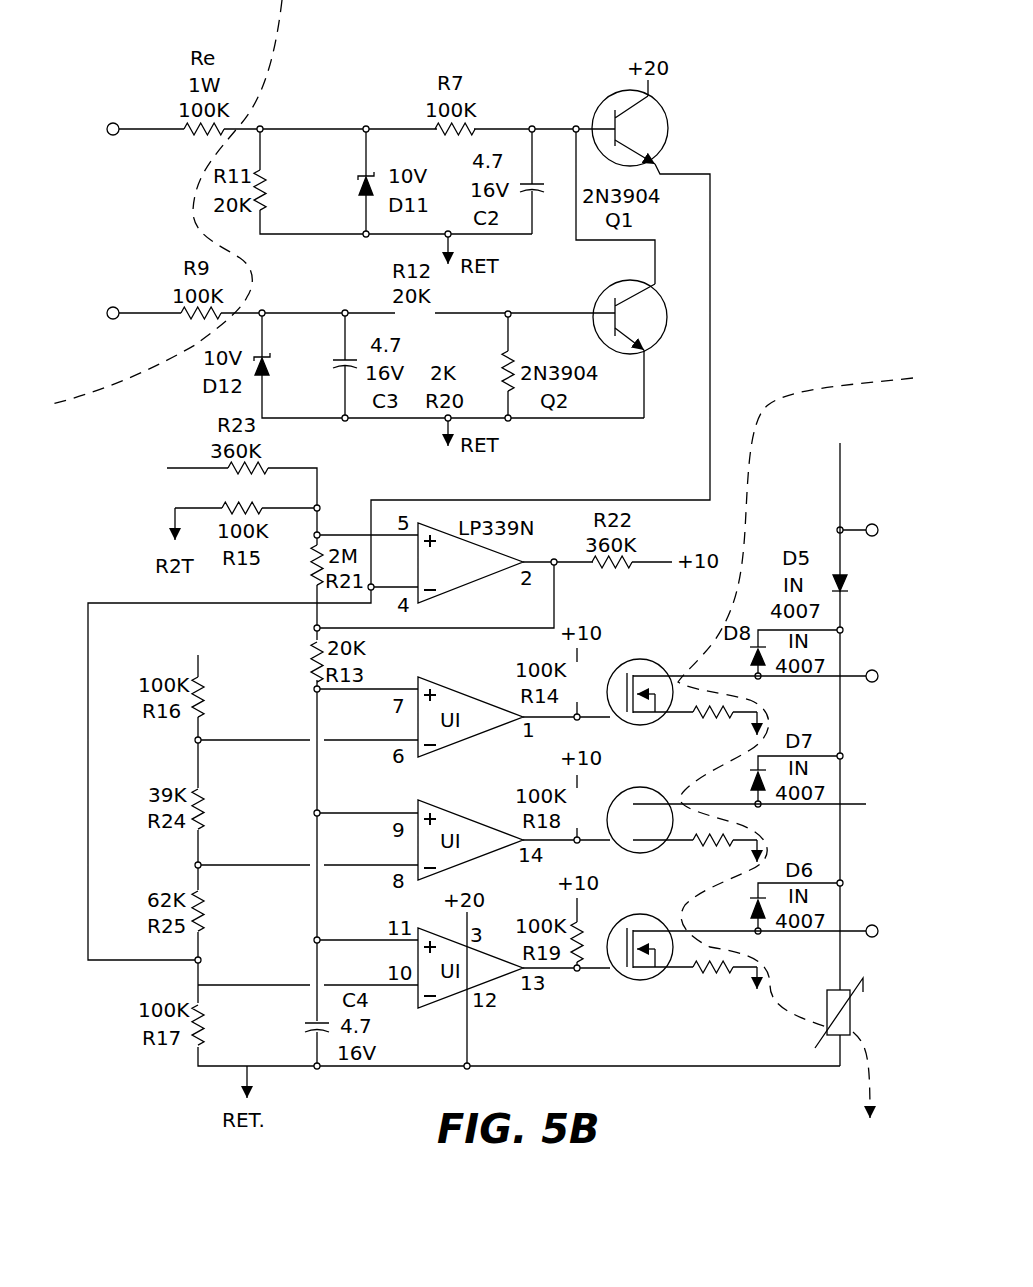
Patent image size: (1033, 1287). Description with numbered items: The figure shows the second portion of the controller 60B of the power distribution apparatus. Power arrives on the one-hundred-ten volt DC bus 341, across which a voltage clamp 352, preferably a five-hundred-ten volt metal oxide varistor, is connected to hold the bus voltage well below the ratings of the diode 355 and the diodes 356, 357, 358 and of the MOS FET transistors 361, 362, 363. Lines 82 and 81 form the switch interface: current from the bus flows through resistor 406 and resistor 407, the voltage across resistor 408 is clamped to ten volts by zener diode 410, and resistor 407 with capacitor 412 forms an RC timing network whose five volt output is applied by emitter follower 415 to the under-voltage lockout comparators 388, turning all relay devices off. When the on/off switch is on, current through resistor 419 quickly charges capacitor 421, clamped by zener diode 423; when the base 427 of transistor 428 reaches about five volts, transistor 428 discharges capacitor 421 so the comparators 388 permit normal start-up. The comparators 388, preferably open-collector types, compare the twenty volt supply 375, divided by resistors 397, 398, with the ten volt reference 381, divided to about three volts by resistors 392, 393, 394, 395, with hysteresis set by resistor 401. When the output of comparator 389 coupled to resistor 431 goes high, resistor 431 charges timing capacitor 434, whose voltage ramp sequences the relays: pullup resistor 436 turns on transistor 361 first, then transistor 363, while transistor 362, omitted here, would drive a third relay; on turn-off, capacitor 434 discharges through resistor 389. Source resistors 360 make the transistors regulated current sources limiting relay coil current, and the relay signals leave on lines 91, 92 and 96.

The second portion of the controller 60B is at (706, 47).
The resistor 406 is at (203, 48).
The resistor 407 is at (446, 70).
The resistor 408 is at (268, 178).
The zener diode 410 is at (405, 166).
The capacitor 412 is at (545, 194).
The emitter follower 415 is at (668, 118).
The resistor 419 is at (177, 250).
The capacitor 421 is at (338, 372).
The zener diode 423 is at (270, 352).
The base of transistor 428 427 is at (546, 320).
The transistor 428 is at (668, 338).
The resistor 431 is at (640, 520).
The 20 volt supply 375 is at (183, 465).
The resistor 397 is at (270, 448).
The resistor 398 is at (240, 570).
The resistor 401 is at (346, 538).
The comparator / resistor 389 is at (370, 650).
The comparators 388 is at (500, 572).
The 10 volt voltage reference supply 381 is at (200, 662).
The resistor 392 is at (200, 690).
The resistor 393 is at (202, 800).
The resistor 394 is at (202, 905).
The resistor 395 is at (202, 1020).
The timing capacitor 434 is at (327, 1036).
The transistor 363 is at (617, 662).
The transistor 362 is at (660, 788).
The transistor 361 is at (635, 1008).
The pullup resistor 436 is at (580, 918).
The source resistors 360 is at (722, 863).
The 110 volt DC bus 341 is at (843, 475).
The diode 355 is at (789, 540).
The diode 356 is at (742, 620).
The diode 357 is at (800, 727).
The diode 358 is at (800, 857).
The voltage clamp 352 is at (848, 990).
The line 92 is at (847, 533).
The line 96 is at (847, 681).
The line 91 is at (857, 925).
The line 82 is at (143, 132).
The line 81 is at (143, 316).